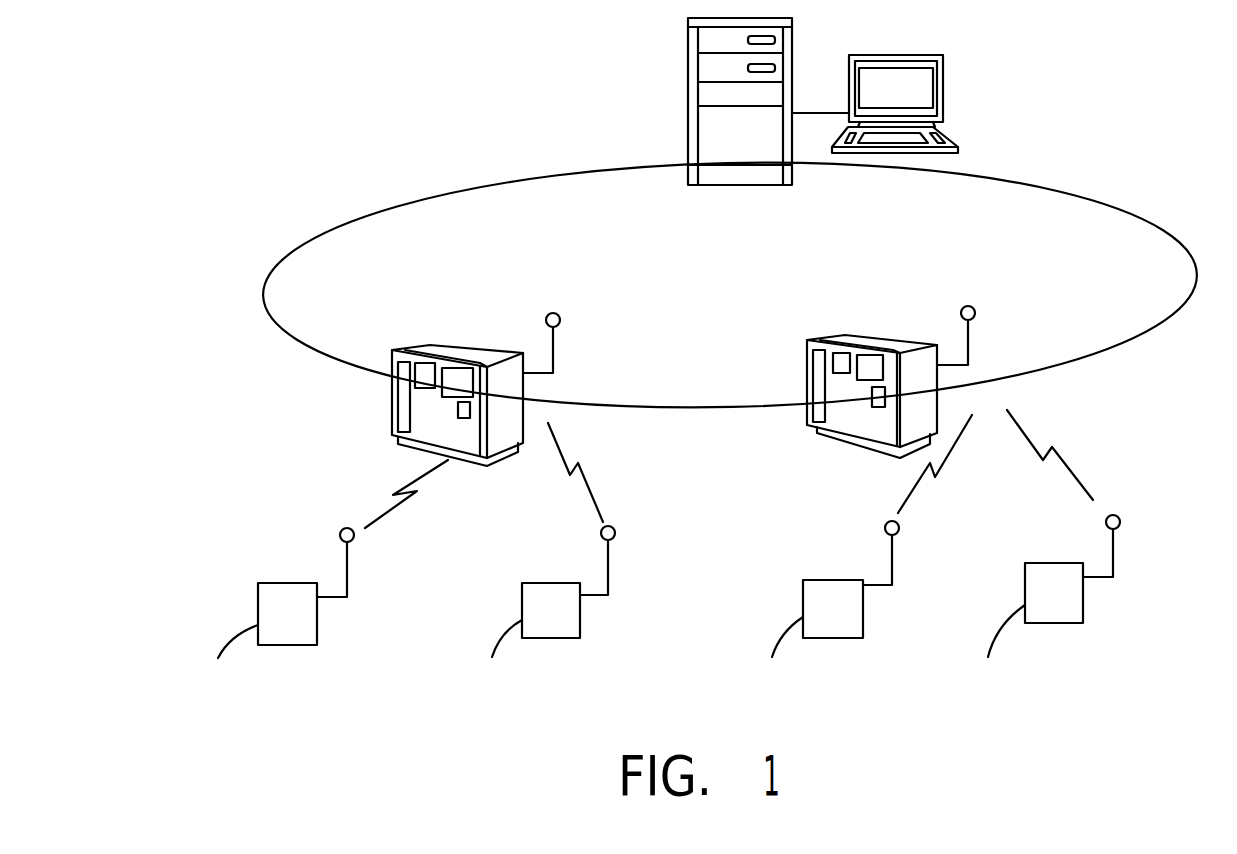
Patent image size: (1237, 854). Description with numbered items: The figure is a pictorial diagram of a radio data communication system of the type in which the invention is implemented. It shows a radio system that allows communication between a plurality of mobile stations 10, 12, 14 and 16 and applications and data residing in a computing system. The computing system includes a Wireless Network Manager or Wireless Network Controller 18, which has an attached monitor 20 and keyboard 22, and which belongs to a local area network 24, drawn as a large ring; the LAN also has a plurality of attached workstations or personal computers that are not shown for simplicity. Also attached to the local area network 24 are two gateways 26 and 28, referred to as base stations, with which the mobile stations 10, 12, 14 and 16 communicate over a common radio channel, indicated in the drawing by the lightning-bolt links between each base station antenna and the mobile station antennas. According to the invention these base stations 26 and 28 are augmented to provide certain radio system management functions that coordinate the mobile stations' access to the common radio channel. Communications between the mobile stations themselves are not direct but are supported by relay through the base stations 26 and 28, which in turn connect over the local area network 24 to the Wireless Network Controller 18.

The mobile station 10 is at (283, 583).
The mobile station 12 is at (562, 583).
The mobile station 14 is at (847, 580).
The mobile station 16 is at (1067, 563).
The Wireless Network Controller 18 is at (688, 70).
The monitor 20 is at (943, 72).
The keyboard 22 is at (950, 138).
The local area network 24 is at (1165, 313).
The gateway 26 is at (500, 314).
The gateway 28 is at (870, 343).